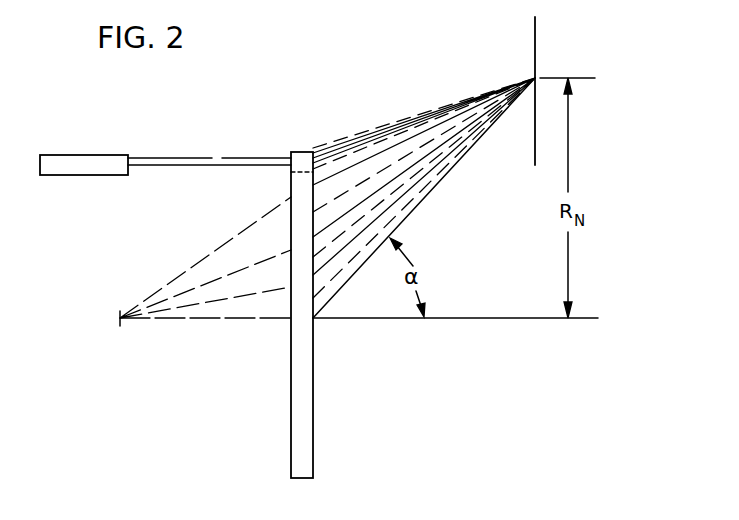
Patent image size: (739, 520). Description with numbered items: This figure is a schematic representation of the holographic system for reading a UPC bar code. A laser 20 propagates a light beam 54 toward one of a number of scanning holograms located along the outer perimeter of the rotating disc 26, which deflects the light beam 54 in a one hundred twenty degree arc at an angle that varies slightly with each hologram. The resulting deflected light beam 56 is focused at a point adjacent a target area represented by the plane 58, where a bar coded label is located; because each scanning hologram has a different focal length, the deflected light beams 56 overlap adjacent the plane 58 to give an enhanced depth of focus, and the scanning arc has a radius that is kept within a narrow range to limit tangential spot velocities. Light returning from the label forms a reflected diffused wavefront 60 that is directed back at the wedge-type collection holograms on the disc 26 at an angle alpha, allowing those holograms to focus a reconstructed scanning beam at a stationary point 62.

The laser 20 is at (91, 157).
The light beam 54 is at (229, 158).
The disc 26 is at (298, 410).
The deflected light beam 56 is at (386, 128).
The plane 58 is at (533, 38).
The reflected diffused wavefront 60 is at (432, 192).
The point 62 is at (118, 318).